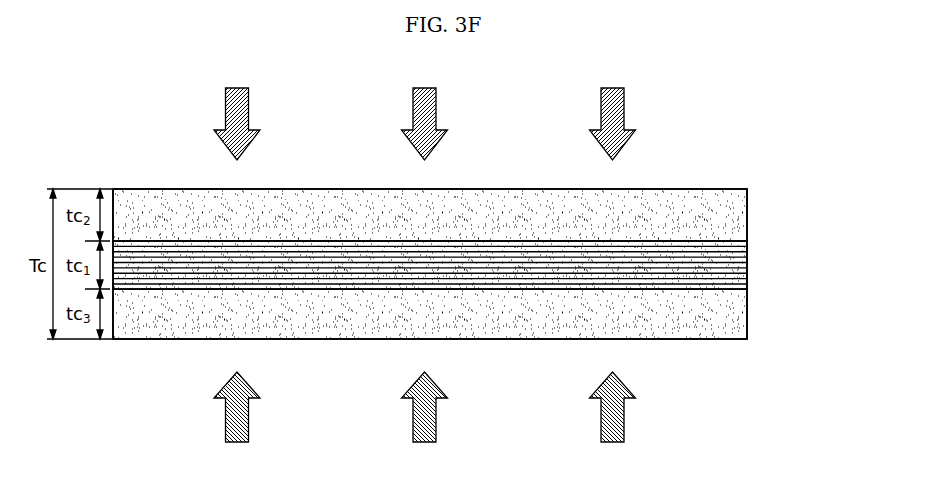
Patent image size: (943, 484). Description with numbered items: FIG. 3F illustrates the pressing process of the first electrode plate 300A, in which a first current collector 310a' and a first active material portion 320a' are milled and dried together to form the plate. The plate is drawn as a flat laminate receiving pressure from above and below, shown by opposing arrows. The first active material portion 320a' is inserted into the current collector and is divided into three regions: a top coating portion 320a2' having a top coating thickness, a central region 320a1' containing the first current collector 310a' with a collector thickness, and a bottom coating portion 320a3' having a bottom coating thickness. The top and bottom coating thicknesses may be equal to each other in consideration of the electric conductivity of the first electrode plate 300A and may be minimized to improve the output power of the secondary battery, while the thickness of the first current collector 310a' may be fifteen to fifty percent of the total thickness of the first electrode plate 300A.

The first electrode plate 300A is at (80, 140).
The first current collector 310a' is at (430, 337).
The first active material portion 320a' is at (510, 290).
The active layer with internal electrodes 320a1' is at (474, 265).
The top coating portion 320a2' is at (474, 215).
The bottom coating portion 320a3' is at (474, 314).